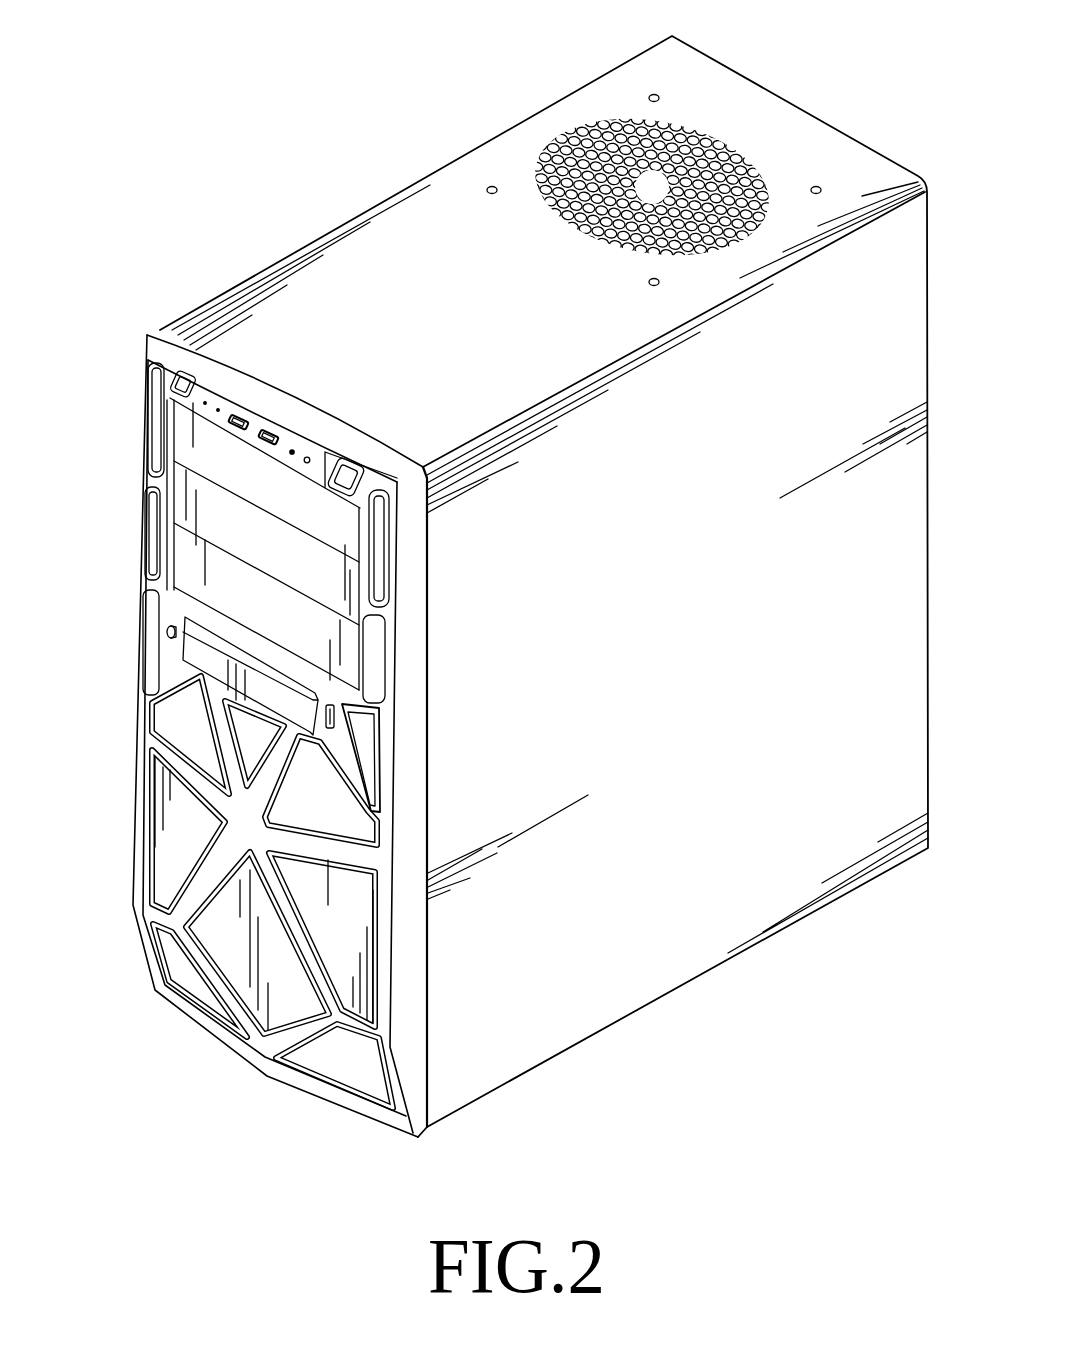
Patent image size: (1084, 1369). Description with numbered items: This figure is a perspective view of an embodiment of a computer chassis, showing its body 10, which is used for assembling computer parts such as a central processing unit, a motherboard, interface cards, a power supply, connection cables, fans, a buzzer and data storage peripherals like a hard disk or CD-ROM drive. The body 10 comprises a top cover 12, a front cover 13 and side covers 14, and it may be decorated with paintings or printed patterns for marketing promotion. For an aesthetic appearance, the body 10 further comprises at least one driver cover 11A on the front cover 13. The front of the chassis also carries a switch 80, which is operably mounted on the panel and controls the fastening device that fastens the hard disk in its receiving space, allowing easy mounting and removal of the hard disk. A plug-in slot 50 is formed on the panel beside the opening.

The body 10 is at (470, 106).
The top cover 12 is at (440, 178).
The front cover 13 is at (163, 335).
The side cover 14 is at (772, 922).
The switch 80 is at (166, 633).
The driver cover 11A is at (205, 668).
The plug-in slot 50 is at (330, 728).